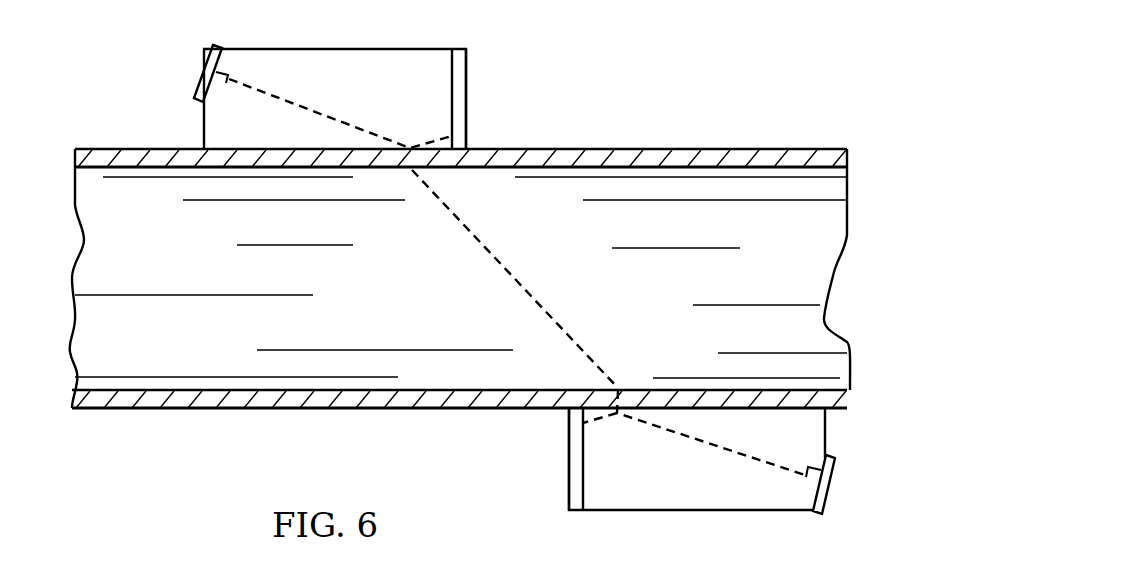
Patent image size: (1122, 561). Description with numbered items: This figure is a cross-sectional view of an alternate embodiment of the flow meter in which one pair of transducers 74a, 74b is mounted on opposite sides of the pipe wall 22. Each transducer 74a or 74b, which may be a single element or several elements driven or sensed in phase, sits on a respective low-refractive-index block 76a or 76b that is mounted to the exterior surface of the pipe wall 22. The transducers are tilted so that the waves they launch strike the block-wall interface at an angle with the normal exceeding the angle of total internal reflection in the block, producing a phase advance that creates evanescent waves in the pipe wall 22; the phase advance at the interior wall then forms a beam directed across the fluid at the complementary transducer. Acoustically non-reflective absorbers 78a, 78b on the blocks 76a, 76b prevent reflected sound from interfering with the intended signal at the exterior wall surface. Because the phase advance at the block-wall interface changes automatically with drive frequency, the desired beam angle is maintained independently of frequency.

The pipe wall 22 is at (663, 149).
The transducer 74a is at (218, 44).
The transducer 74b is at (837, 455).
The low-refractive-index block 76a is at (363, 49).
The low-refractive-index block 76b is at (665, 511).
The acoustically non-reflective absorber 78a is at (468, 89).
The acoustically non-reflective absorber 78b is at (567, 446).